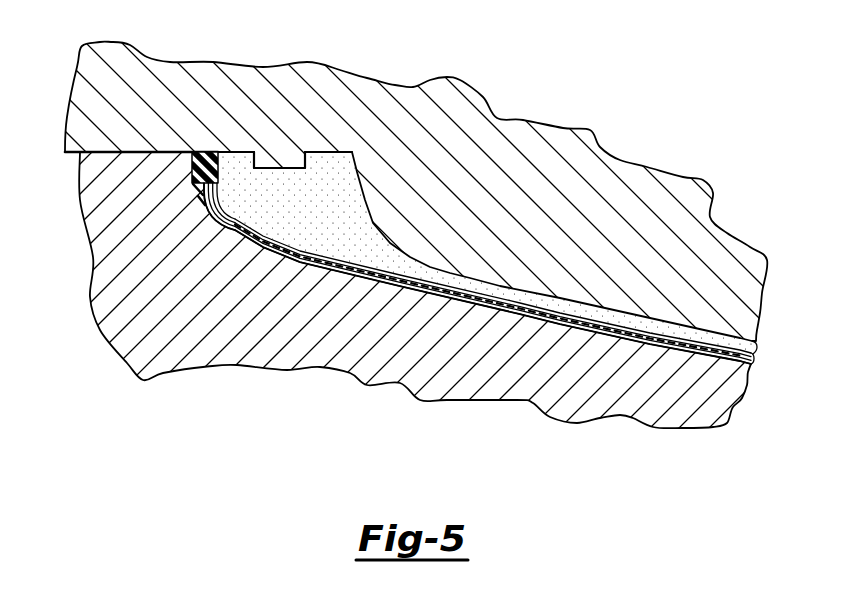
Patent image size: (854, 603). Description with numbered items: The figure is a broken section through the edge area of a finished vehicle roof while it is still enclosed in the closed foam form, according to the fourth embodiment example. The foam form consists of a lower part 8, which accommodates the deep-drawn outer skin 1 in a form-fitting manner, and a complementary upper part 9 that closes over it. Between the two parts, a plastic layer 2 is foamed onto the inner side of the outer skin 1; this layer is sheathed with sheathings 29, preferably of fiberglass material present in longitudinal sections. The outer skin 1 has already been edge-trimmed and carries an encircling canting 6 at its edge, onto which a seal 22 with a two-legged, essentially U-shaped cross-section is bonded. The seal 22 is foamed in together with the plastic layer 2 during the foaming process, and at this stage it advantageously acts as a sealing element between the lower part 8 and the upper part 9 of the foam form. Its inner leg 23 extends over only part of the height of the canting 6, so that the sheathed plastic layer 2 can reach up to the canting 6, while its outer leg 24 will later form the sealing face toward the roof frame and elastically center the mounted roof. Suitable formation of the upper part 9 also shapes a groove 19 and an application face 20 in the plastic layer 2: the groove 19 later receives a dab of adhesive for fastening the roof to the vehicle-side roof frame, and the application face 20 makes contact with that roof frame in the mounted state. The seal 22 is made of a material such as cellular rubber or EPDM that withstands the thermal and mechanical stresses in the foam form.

The outer skin 1 is at (588, 326).
The plastic layer 2 is at (531, 303).
The canting 6 is at (200, 197).
The lower part 8 is at (113, 327).
The upper part 9 is at (83, 92).
The groove 19 is at (272, 167).
The application face 20 is at (235, 152).
The seal 22 is at (204, 142).
The inner leg 23 is at (227, 218).
The outer leg 24 is at (190, 183).
The sheathings 29 is at (353, 258).